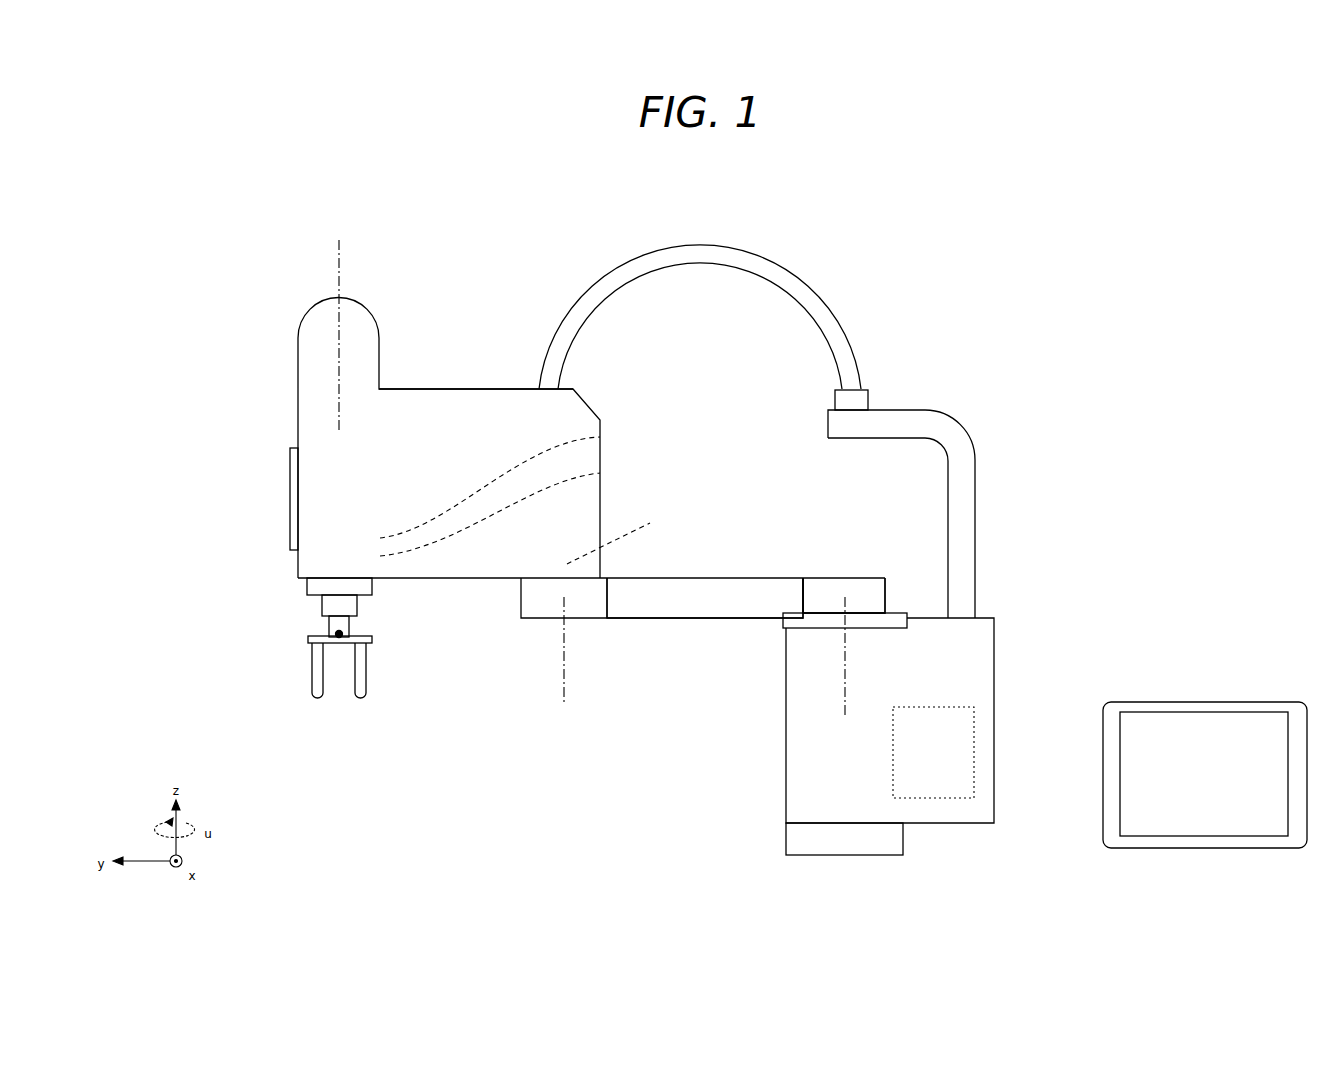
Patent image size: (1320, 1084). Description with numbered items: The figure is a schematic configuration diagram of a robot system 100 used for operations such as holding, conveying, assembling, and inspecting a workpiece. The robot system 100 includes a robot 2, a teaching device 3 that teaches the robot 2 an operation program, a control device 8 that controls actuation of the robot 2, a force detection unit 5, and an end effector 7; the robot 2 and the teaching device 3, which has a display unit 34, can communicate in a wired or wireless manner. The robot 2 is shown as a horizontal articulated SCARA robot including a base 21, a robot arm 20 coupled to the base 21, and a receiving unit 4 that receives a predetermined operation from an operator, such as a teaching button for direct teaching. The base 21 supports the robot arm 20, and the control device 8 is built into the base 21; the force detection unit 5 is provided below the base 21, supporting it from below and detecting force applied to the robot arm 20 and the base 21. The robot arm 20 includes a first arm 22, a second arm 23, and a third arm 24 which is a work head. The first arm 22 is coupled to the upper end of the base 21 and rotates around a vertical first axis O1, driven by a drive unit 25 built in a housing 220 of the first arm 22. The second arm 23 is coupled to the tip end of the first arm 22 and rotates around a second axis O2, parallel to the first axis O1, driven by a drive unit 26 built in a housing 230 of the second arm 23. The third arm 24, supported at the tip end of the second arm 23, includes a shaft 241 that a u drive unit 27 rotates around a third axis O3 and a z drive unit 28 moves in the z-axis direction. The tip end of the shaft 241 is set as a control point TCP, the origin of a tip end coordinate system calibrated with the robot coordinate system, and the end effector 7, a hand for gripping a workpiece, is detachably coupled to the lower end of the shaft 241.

The robot system 100 is at (916, 224).
The robot 2 is at (617, 251).
The housing 230 is at (455, 389).
The second arm 23 is at (320, 400).
The third axis O3 is at (345, 247).
The receiving unit 4 is at (291, 500).
The z drive unit 28 is at (600, 437).
The u drive unit 27 is at (600, 473).
The drive unit 26 is at (624, 537).
The robot arm 20 is at (713, 569).
The first arm 22 is at (648, 598).
The housing 220 is at (772, 598).
The drive unit 25 is at (857, 598).
The second axis O2 is at (561, 650).
The base 21 is at (967, 657).
The first axis O1 is at (845, 700).
The control device 8 is at (972, 757).
The force detection unit 5 is at (813, 838).
The third arm 24 is at (337, 605).
The shaft 241 is at (343, 625).
The control point TCP is at (336, 633).
The end effector 7 is at (377, 670).
The teaching device 3 is at (1253, 702).
The display unit 34 is at (1205, 808).